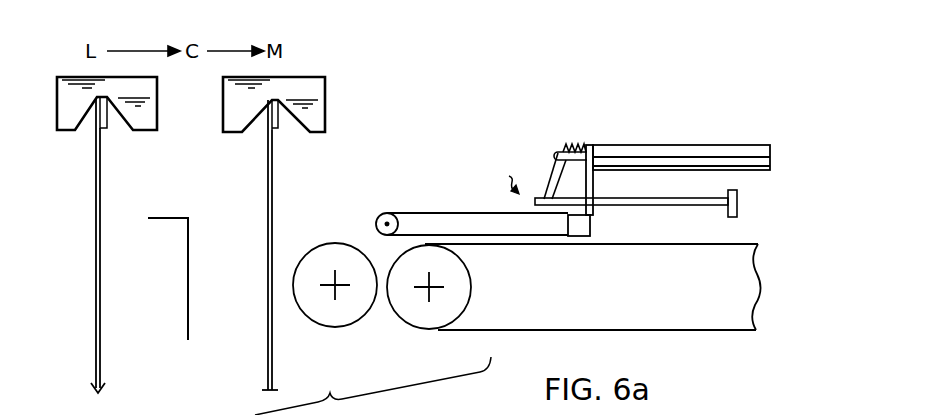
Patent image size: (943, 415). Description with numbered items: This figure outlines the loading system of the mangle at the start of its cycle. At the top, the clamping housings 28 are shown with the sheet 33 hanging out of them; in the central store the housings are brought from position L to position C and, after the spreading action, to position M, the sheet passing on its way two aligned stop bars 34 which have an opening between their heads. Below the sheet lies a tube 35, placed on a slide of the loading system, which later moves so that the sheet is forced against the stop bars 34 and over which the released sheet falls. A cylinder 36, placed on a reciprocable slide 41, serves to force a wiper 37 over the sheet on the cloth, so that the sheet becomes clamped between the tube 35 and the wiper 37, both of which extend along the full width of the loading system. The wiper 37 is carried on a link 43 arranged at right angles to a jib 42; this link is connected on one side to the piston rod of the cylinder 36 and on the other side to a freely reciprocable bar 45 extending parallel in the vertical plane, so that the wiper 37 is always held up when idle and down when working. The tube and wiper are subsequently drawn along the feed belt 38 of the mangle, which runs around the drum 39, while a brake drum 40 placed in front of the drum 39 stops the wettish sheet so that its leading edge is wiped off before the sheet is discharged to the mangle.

The clamping housing 28 is at (144, 112).
The sheet 33 is at (99, 350).
The stop bar 34 is at (169, 223).
The tube 35 is at (382, 214).
The cylinder 36 is at (679, 156).
The wiper 37 is at (507, 173).
The feed belt 38 is at (603, 250).
The drum 39 is at (418, 313).
The brake drum 40 is at (343, 313).
The reciprocable slide 41 is at (583, 225).
The jib 42 is at (550, 180).
The link 43 is at (550, 184).
The freely reciprocable bar 45 is at (613, 197).